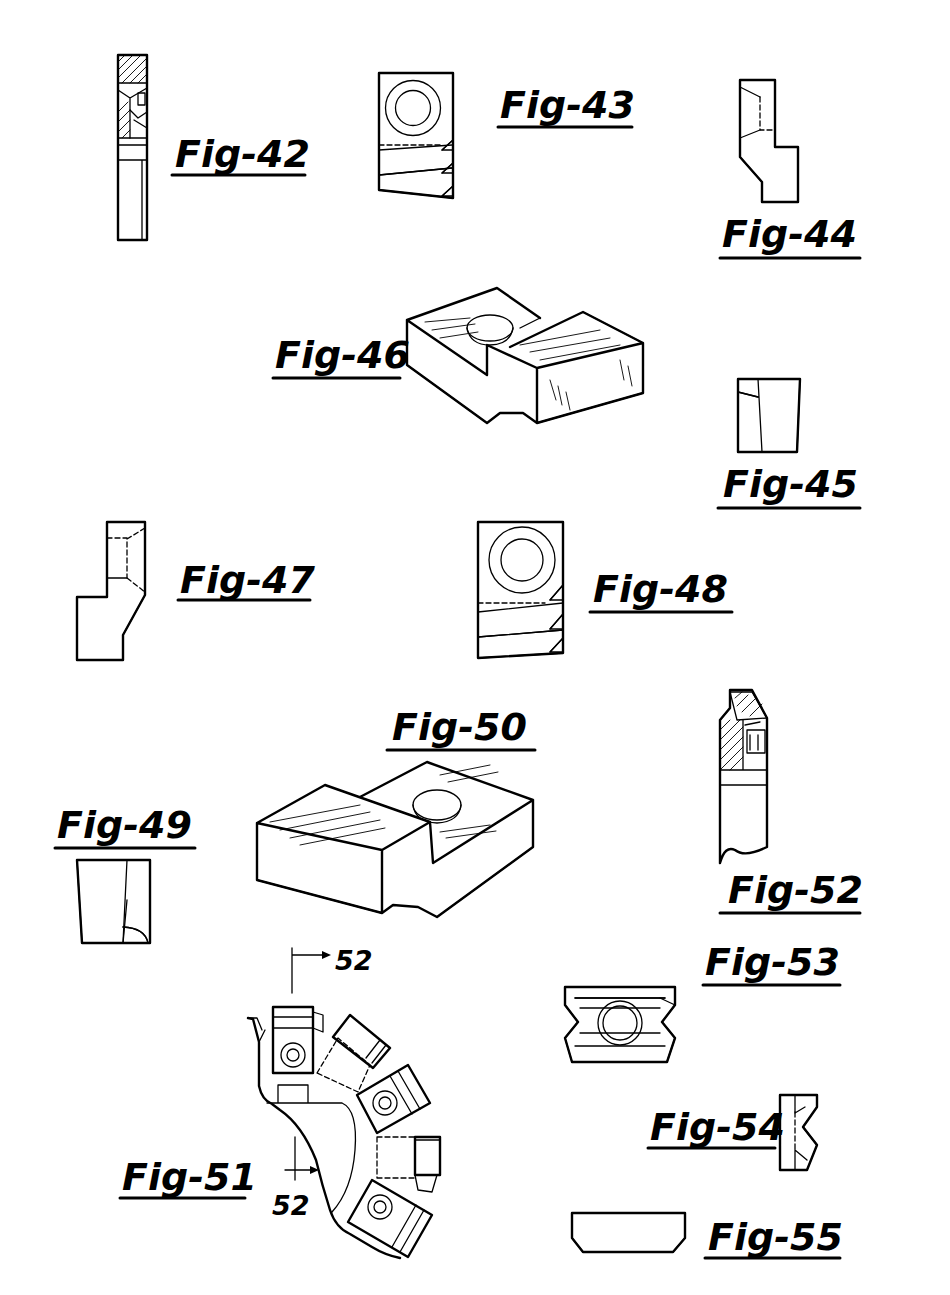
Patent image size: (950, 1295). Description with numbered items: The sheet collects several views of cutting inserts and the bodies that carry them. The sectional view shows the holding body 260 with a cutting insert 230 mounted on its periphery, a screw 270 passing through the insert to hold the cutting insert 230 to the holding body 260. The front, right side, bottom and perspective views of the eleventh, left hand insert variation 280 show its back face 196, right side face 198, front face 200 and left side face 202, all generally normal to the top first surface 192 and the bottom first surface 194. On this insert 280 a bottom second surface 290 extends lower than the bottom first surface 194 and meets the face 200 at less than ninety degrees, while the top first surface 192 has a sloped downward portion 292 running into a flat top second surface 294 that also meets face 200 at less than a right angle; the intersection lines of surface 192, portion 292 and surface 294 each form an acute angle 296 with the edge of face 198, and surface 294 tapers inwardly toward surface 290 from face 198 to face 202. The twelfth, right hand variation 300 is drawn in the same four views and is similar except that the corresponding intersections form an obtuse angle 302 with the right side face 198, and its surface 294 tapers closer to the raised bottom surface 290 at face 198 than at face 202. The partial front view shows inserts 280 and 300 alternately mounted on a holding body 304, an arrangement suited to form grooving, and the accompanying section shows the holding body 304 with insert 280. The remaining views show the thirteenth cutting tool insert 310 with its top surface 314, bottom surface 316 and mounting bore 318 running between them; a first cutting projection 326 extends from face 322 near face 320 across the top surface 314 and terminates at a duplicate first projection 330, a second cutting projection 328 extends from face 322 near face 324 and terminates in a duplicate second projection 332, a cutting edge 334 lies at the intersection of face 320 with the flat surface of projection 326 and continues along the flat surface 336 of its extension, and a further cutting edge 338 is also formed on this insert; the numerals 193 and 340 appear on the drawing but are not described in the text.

In FIG. 44, the top first surface 192 is at (740, 145).
In FIG. 45, the top first surface 192 is at (738, 413).
In FIG. 47, the top first surface 192 is at (148, 602).
In FIG. 48, the top first surface 192 is at (478, 532).
In FIG. 49, the top first surface 192 is at (152, 898).
In FIG. 44, the second side surface 193 is at (795, 145).
In FIG. 47, the second side surface 193 is at (93, 593).
In FIG. 44, the bottom first surface 194 is at (775, 88).
In FIG. 46, the bottom first surface 194 is at (455, 320).
In FIG. 45, the bottom first surface 194 is at (738, 392).
In FIG. 47, the bottom first surface 194 is at (107, 528).
In FIG. 50, the bottom first surface 194 is at (493, 805).
In FIG. 43, the back face 196 is at (412, 73).
In FIG. 44, the back face 196 is at (760, 80).
In FIG. 47, the back face 196 is at (123, 520).
In FIG. 48, the back face 196 is at (517, 520).
In FIG. 43, the right side face 198 is at (453, 127).
In FIG. 46, the right side face 198 is at (453, 373).
In FIG. 45, the right side face 198 is at (757, 378).
In FIG. 48, the right side face 198 is at (563, 553).
In FIG. 50, the right side face 198 is at (483, 860).
In FIG. 49, the right side face 198 is at (110, 943).
In FIG. 43, the front face 200 is at (412, 199).
In FIG. 44, the front face 200 is at (787, 202).
In FIG. 46, the front face 200 is at (613, 387).
In FIG. 47, the front face 200 is at (103, 660).
In FIG. 48, the front face 200 is at (527, 657).
In FIG. 50, the front face 200 is at (298, 863).
In FIG. 49, the front face 200 is at (100, 925).
In FIG. 43, the left side face 202 is at (379, 128).
In FIG. 45, the left side face 202 is at (770, 452).
In FIG. 48, the left side face 202 is at (478, 577).
In FIG. 49, the left side face 202 is at (130, 858).
In FIG. 42, the cutting insert 230 is at (145, 70).
In FIG. 42, the holding body 260 is at (117, 127).
In FIG. 42, the screw 270 is at (145, 85).
In FIG. 52, the screw 270 is at (767, 732).
In FIG. 43, the eleventh variation of a cutting insert 280 is at (374, 191).
In FIG. 44, the eleventh variation of a cutting insert 280 is at (737, 102).
In FIG. 46, the eleventh variation of a cutting insert 280 is at (537, 304).
In FIG. 45, the eleventh variation of a cutting insert 280 is at (785, 375).
In FIG. 52, the eleventh variation of a cutting insert 280 is at (730, 703).
In FIG. 51, the eleventh variation of a cutting insert 280 is at (292, 1007).
In FIG. 44, the bottom second surface 290 is at (800, 162).
In FIG. 46, the bottom second surface 290 is at (590, 333).
In FIG. 45, the bottom second surface 290 is at (798, 417).
In FIG. 47, the bottom second surface 290 is at (77, 630).
In FIG. 50, the bottom second surface 290 is at (333, 803).
In FIG. 49, the bottom second surface 290 is at (77, 883).
In FIG. 43, the sloped downward portion 292 is at (379, 155).
In FIG. 44, the sloped downward portion 292 is at (748, 170).
In FIG. 47, the sloped downward portion 292 is at (137, 623).
In FIG. 48, the sloped downward portion 292 is at (478, 622).
In FIG. 49, the sloped downward portion 292 is at (137, 923).
In FIG. 43, the top second surface 294 is at (379, 182).
In FIG. 44, the top second surface 294 is at (755, 193).
In FIG. 47, the top second surface 294 is at (125, 647).
In FIG. 48, the top second surface 294 is at (478, 650).
In FIG. 49, the top second surface 294 is at (143, 943).
In FIG. 43, the acute angle 296 is at (455, 192).
In FIG. 47, the twelfth variation of a cutting insert 300 is at (152, 553).
In FIG. 48, the twelfth variation of a cutting insert 300 is at (566, 530).
In FIG. 50, the twelfth variation of a cutting insert 300 is at (283, 802).
In FIG. 49, the twelfth variation of a cutting insert 300 is at (123, 948).
In FIG. 52, the twelfth variation of a cutting insert 300 is at (765, 703).
In FIG. 51, the twelfth variation of a cutting insert 300 is at (362, 1022).
In FIG. 48, the obtuse angle 302 is at (563, 647).
In FIG. 52, the holding body 304 is at (720, 758).
In FIG. 51, the holding body 304 is at (342, 1103).
In FIG. 53, the cutting tool insert 310 is at (563, 980).
In FIG. 54, the cutting tool insert 310 is at (796, 1087).
In FIG. 54, the top surface 314 is at (808, 1127).
In FIG. 55, the top surface 314 is at (643, 1252).
In FIG. 54, the bottom surface 316 is at (780, 1102).
In FIG. 55, the bottom surface 316 is at (623, 1212).
In FIG. 53, the mounting bore 318 is at (607, 1020).
In FIG. 54, the mounting bore 318 is at (777, 1162).
In FIG. 53, the face 320 is at (647, 987).
In FIG. 54, the face 320 is at (783, 1095).
In FIG. 53, the face 322 is at (672, 1022).
In FIG. 55, the face 322 is at (687, 1232).
In FIG. 53, the face 324 is at (610, 1063).
In FIG. 54, the face 324 is at (793, 1170).
In FIG. 53, the first cutting projection 326 is at (572, 1020).
In FIG. 55, the first cutting projection 326 is at (572, 1227).
In FIG. 53, the second cutting projection 328 is at (673, 1043).
In FIG. 53, the duplicate first projection 330 is at (567, 997).
In FIG. 55, the duplicate first projection 330 is at (577, 1247).
In FIG. 53, the duplicate second projection 332 is at (572, 1040).
In FIG. 53, the cutting edge 334 is at (618, 987).
In FIG. 54, the cutting edge 334 is at (810, 1095).
In FIG. 53, the flat surface 336 is at (657, 995).
In FIG. 54, the flat surface 336 is at (817, 1103).
In FIG. 54, the cutting edge 338 is at (817, 1142).
In FIG. 54, the cutting edge 340 is at (818, 1153).